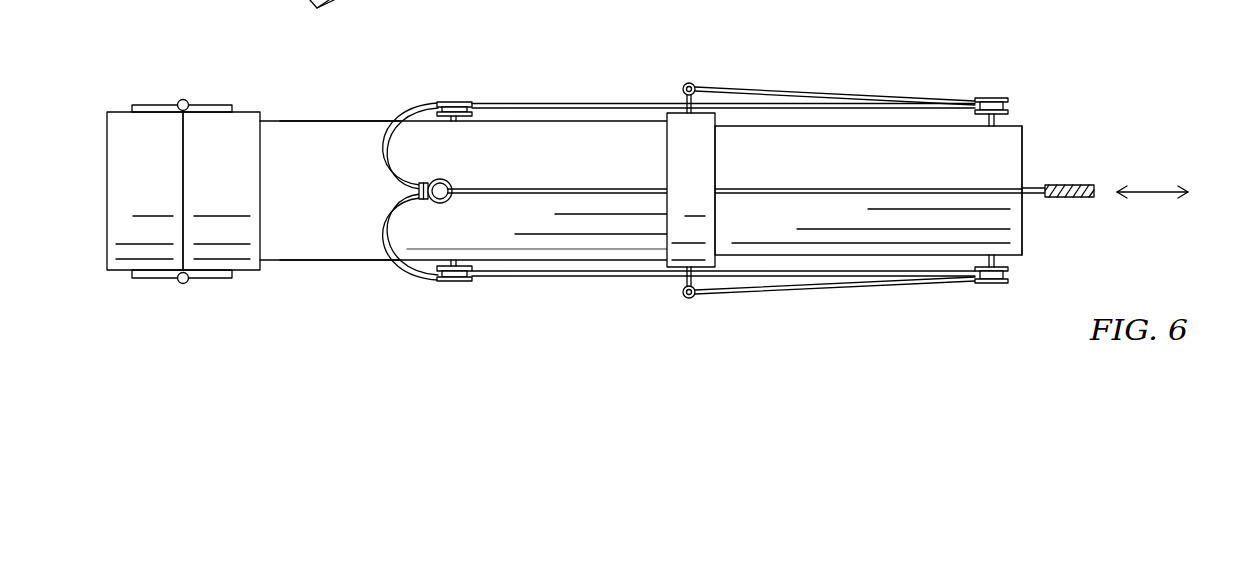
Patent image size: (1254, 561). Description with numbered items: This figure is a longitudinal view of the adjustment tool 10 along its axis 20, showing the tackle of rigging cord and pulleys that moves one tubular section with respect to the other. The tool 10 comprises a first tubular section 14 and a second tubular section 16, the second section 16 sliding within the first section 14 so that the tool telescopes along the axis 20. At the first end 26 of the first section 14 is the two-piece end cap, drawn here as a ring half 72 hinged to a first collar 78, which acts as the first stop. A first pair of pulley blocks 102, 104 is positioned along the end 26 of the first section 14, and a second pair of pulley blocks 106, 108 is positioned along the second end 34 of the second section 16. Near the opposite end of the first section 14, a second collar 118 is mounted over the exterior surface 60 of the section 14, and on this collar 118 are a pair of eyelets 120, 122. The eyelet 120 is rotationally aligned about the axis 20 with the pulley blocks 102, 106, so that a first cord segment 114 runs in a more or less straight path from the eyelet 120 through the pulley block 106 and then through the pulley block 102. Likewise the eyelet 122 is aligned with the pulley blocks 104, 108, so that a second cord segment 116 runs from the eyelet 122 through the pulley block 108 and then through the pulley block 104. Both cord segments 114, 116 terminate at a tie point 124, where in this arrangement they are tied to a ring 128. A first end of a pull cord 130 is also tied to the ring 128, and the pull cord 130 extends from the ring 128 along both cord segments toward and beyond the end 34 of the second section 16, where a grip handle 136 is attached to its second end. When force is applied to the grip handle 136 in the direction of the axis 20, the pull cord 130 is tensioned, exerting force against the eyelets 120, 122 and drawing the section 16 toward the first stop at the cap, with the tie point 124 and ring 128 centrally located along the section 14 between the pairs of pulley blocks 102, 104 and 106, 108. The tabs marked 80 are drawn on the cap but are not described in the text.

The adjustment tool 10 is at (840, 49).
The first tubular section 14 is at (350, 202).
The second tubular section 16 is at (915, 172).
The axis 20 is at (1145, 190).
The first end 26 is at (300, 261).
The second end 34 is at (1015, 256).
The exterior surface 60 is at (328, 121).
The ring half 72 is at (157, 180).
The first collar 78 is at (237, 180).
The mounting tabs 80 is at (212, 104).
The pulley block 102 is at (450, 283).
The pulley block 104 is at (450, 100).
The pulley block 106 is at (990, 285).
The pulley block 108 is at (993, 96).
The first cord segment 114 is at (532, 278).
The second cord segment 116 is at (530, 103).
The second collar 118 is at (718, 158).
The eyelet 120 is at (692, 299).
The eyelet 122 is at (692, 83).
The tie point 124 is at (422, 182).
The ring 128 is at (444, 202).
The pull cord 130 is at (507, 188).
The grip handle 136 is at (1067, 185).